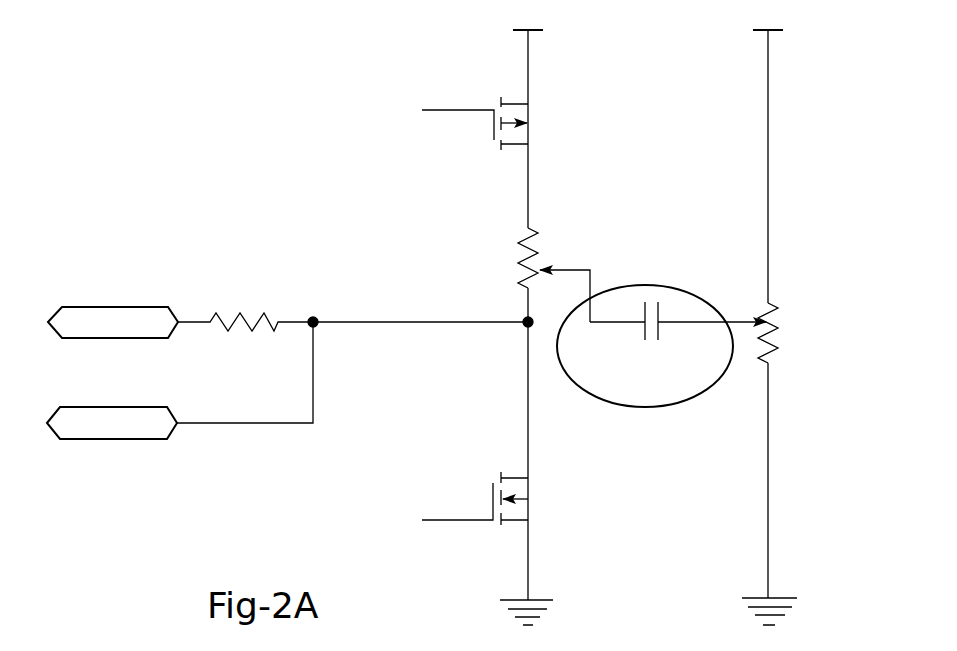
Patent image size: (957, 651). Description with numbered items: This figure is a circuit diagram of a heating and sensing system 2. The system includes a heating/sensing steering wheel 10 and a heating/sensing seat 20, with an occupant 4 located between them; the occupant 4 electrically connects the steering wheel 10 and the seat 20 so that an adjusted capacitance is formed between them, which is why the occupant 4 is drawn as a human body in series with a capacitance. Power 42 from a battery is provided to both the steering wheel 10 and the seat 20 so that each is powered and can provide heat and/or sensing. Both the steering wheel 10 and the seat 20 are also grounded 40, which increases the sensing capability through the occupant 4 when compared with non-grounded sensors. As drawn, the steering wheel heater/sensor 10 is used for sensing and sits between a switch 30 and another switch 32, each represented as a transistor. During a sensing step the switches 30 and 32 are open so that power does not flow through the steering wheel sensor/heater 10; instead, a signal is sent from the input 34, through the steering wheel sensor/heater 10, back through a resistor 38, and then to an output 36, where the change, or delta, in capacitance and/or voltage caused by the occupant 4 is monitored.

The heating and sensing system 2 is at (240, 165).
The occupant 4 is at (688, 415).
The heating/sensing steering wheel 10 is at (518, 238).
The heating/sensing seat 20 is at (773, 313).
The switch 30 is at (497, 533).
The switch 32 is at (477, 90).
The input 34 is at (103, 440).
The output 36 is at (117, 305).
The resistor 38 is at (230, 317).
The ground 40 is at (549, 596).
The power 42 is at (543, 25).